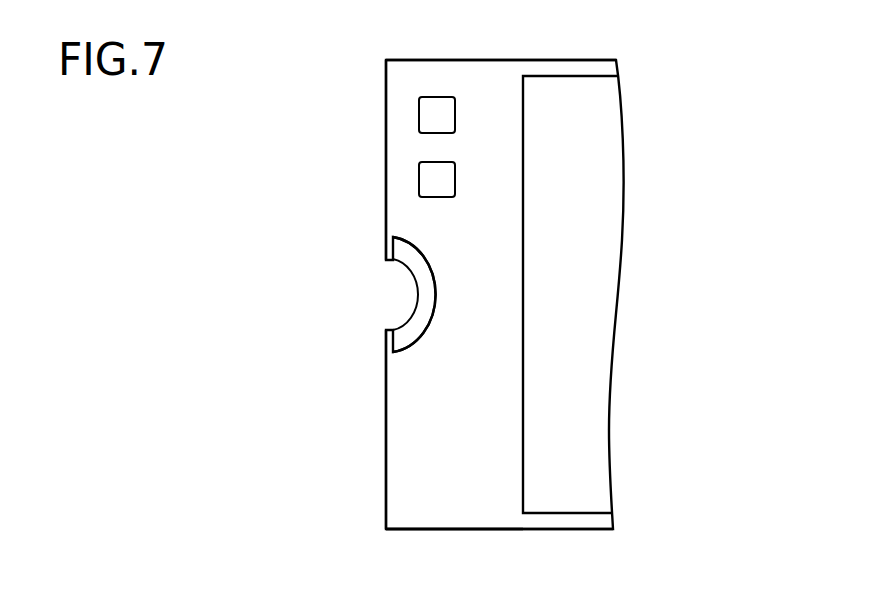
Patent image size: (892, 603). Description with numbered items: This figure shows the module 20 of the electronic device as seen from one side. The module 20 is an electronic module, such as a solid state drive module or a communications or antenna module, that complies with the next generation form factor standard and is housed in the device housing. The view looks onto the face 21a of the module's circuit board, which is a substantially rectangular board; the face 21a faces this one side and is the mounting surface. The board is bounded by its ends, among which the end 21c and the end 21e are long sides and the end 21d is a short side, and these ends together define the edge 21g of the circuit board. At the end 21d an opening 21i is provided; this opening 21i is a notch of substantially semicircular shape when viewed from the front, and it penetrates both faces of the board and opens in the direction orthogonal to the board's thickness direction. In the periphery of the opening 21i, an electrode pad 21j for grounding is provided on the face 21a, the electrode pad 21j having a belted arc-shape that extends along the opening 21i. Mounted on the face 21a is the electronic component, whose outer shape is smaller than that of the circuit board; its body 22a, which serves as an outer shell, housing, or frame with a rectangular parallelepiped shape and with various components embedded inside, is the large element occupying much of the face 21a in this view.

The module 20 is at (691, 80).
The face 21a is at (506, 515).
The end 21c is at (490, 60).
The end 21d is at (386, 120).
The end 21e is at (432, 530).
The edge 21g is at (386, 481).
The opening 21i is at (397, 296).
The electrode pad 21j is at (397, 345).
The body 22a is at (605, 291).